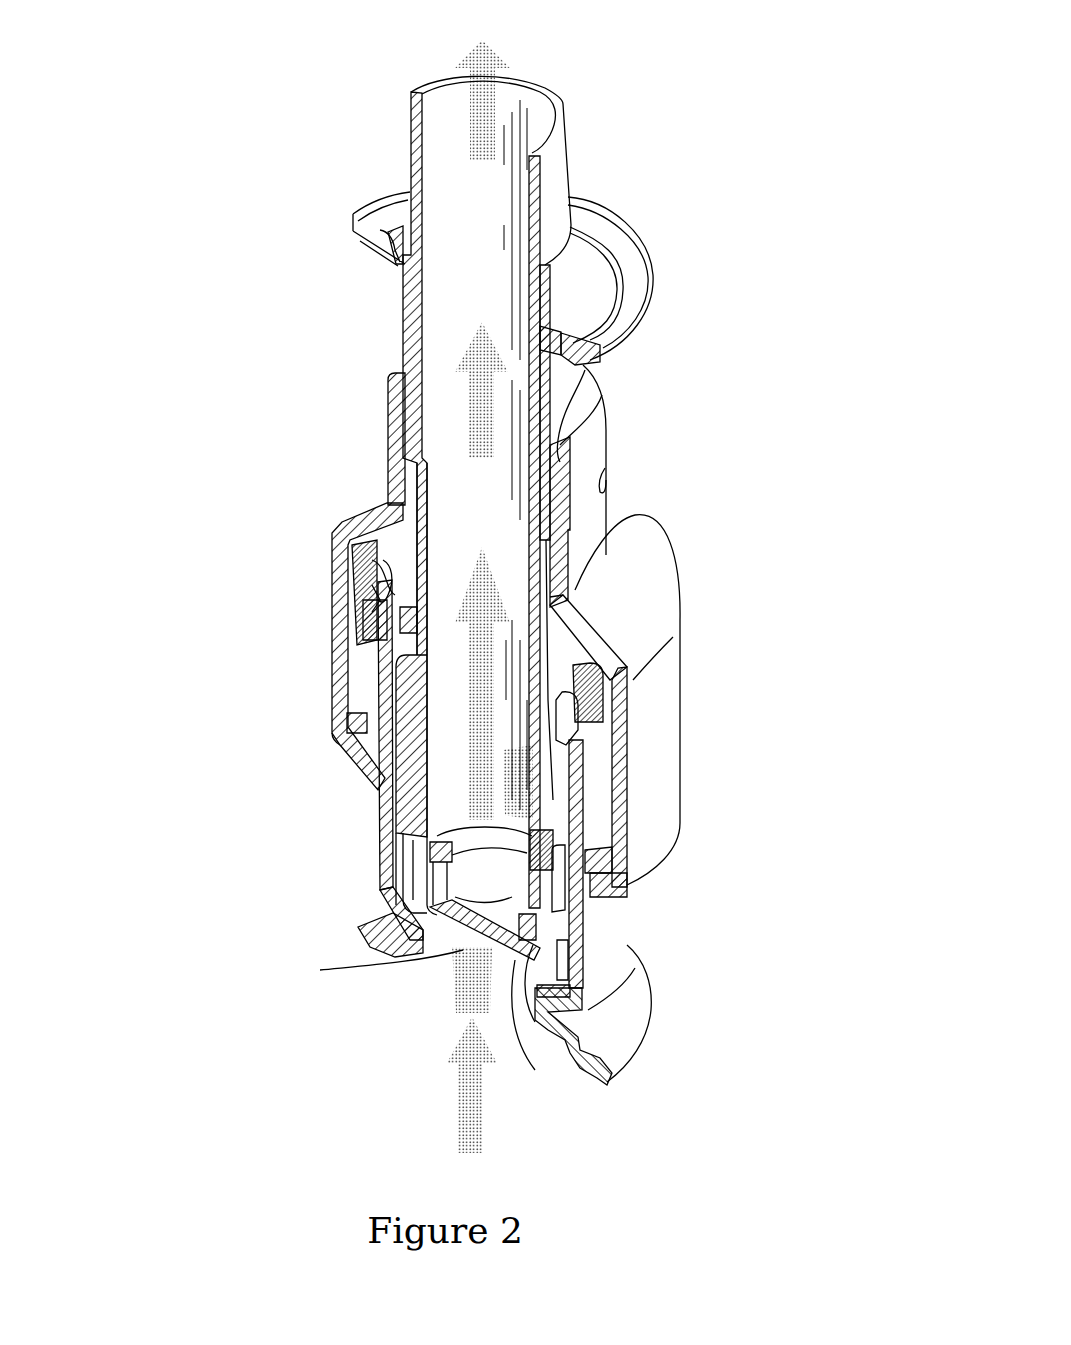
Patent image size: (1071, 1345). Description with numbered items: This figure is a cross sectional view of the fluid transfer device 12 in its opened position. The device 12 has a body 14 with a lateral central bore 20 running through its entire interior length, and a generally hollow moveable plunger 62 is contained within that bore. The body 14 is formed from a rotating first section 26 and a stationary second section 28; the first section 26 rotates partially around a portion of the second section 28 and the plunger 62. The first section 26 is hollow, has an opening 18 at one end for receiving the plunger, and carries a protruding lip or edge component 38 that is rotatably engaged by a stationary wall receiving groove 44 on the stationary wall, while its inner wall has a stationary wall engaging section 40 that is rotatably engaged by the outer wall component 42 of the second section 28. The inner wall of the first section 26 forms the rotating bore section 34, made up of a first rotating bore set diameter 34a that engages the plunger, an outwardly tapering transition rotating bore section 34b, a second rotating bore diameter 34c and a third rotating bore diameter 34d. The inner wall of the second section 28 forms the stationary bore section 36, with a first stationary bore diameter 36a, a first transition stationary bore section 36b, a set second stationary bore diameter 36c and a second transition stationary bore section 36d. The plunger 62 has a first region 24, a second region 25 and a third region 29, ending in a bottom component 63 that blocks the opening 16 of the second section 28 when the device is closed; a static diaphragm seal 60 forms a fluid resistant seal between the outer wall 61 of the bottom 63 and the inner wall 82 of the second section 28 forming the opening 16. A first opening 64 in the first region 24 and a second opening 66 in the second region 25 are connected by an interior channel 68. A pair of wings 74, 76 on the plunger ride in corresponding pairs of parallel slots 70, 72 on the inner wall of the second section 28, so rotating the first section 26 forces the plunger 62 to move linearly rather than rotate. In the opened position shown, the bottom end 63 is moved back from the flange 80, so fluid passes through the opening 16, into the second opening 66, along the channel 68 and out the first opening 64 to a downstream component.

The device 12 is at (262, 127).
The body 14 is at (748, 625).
The opening 16 is at (455, 930).
The opening 18 is at (560, 403).
The bore 20 is at (388, 432).
The first region 24 is at (330, 376).
The second region 25 is at (270, 685).
The rotating first section 26 is at (641, 633).
The stationary second section 28 is at (589, 958).
The third region 29 is at (264, 889).
The rotating bore section 34 is at (560, 507).
The first rotating bore set diameter 34a is at (560, 401).
The transition rotating bore section 34b is at (578, 585).
The second rotating bore diameter 34c is at (617, 710).
The third rotating bore diameter 34d is at (623, 887).
The stationary bore section 36 is at (397, 714).
The first stationary bore diameter 36a is at (535, 1070).
The first transition stationary bore section 36b is at (642, 1015).
The second stationary bore diameter 36c is at (397, 680).
The second transition stationary bore section 36d is at (375, 570).
The protruding lip or edge component 38 is at (343, 745).
The stationary wall engaging section 40 is at (603, 677).
The outer wall component 42 is at (340, 522).
The stationary wall receiving groove 44 is at (620, 880).
The static diaphragm seal 60 is at (518, 1037).
The outer wall 61 is at (395, 883).
The plunger 62 is at (557, 167).
The bottom component 63 is at (377, 943).
The first opening 64 is at (438, 108).
The second opening 66 is at (627, 797).
The channel 68 is at (459, 526).
The parallel slots 70 is at (400, 862).
The parallel slots 72 is at (590, 970).
The wing 74 is at (400, 803).
The wing 76 is at (590, 911).
The flange 80 is at (602, 1041).
The inner wall 82 is at (462, 950).